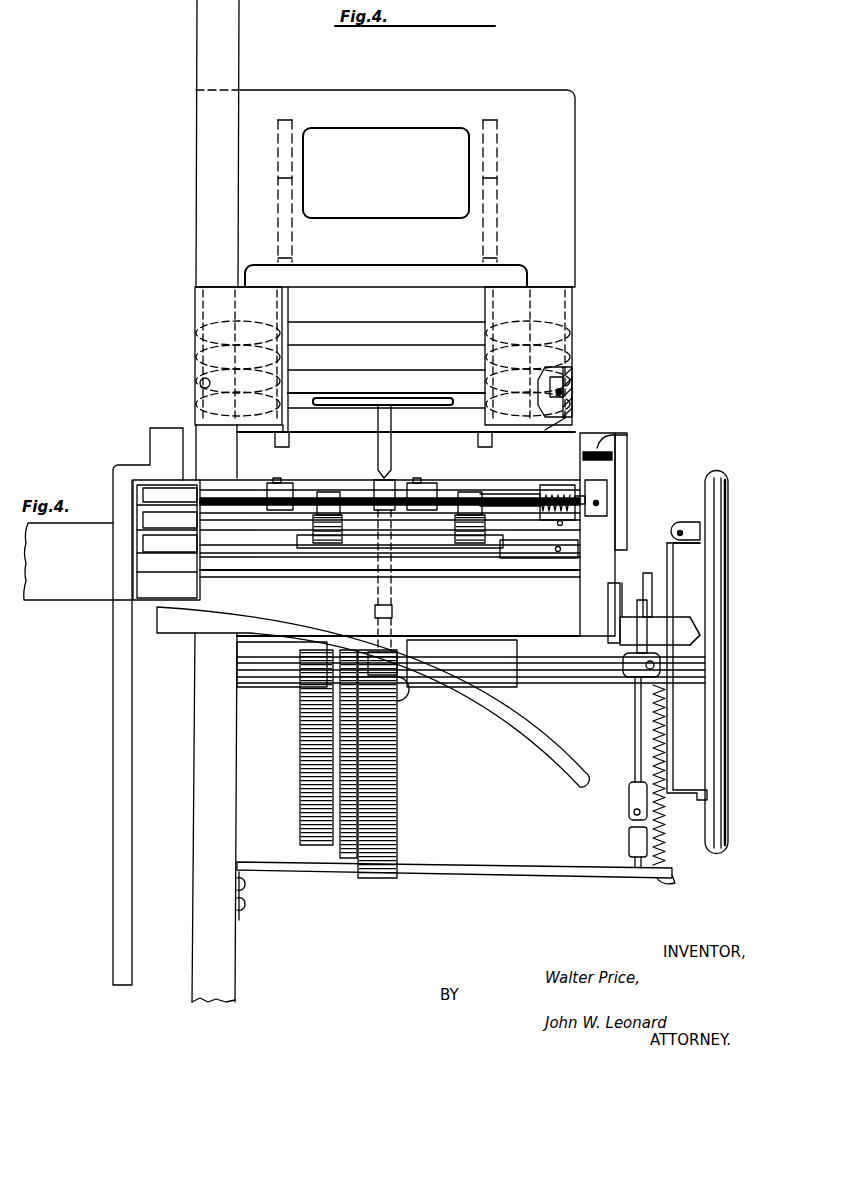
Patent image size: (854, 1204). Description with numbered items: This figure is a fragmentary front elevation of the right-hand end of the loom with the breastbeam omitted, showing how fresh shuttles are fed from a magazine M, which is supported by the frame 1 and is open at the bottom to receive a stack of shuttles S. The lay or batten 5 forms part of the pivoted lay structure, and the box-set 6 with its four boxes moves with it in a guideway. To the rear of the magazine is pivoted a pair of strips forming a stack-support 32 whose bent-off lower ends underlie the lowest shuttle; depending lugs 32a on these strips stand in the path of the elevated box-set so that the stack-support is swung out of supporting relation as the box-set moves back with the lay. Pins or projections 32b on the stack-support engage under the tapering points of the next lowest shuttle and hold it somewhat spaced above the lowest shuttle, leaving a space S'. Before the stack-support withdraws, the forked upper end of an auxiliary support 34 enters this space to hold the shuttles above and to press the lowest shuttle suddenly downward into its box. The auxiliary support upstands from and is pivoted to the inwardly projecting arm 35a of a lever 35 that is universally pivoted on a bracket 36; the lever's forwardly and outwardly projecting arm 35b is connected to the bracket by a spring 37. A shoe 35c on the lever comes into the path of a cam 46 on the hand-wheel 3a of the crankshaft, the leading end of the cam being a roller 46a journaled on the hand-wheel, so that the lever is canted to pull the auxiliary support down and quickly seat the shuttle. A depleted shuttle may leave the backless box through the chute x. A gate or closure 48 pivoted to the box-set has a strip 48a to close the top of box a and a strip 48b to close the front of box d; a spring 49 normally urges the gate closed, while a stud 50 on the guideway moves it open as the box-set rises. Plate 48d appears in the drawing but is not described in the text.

The frame 1 is at (194, 826).
The lay or batten 5 is at (71, 598).
The box-set 6 is at (204, 385).
The stack-support 32 is at (290, 265).
The depending lugs 32a is at (288, 440).
The pins or projections 32b is at (572, 400).
The auxiliary support 34 is at (392, 455).
The gate or closure 48 is at (317, 525).
The strip 48a is at (470, 480).
The strip 48b is at (400, 545).
The plate 48d is at (563, 534).
The spring 49 is at (553, 492).
The stud 50 is at (624, 442).
The hand-wheel 3a is at (728, 572).
The roller 46a is at (676, 521).
The cam 46 is at (673, 770).
The lever 35 is at (634, 735).
The inwardly projecting arm 35a is at (557, 670).
The forwardly projecting arm 35b is at (654, 609).
The shoe 35c is at (693, 625).
The bracket 36 is at (545, 870).
The spring 37 is at (660, 835).
The chute x is at (517, 717).
The magazine M is at (572, 328).
The spool S is at (400, 353).
The space S' is at (375, 389).